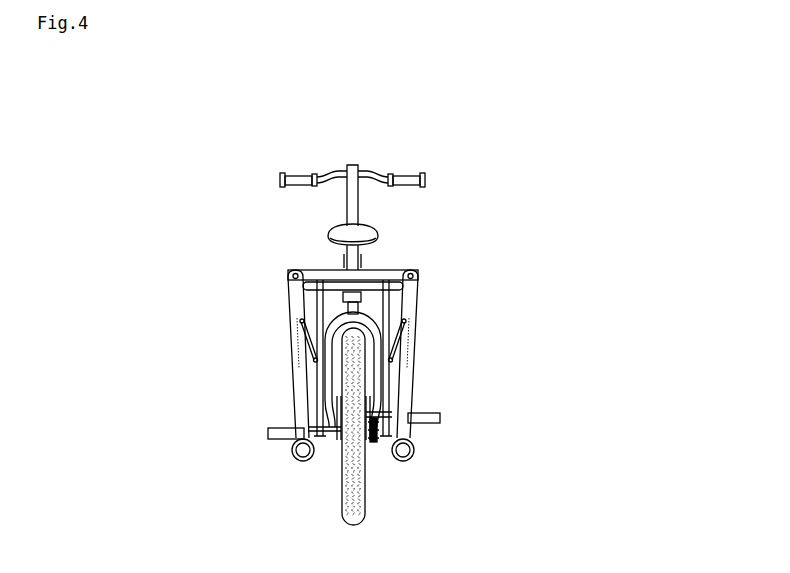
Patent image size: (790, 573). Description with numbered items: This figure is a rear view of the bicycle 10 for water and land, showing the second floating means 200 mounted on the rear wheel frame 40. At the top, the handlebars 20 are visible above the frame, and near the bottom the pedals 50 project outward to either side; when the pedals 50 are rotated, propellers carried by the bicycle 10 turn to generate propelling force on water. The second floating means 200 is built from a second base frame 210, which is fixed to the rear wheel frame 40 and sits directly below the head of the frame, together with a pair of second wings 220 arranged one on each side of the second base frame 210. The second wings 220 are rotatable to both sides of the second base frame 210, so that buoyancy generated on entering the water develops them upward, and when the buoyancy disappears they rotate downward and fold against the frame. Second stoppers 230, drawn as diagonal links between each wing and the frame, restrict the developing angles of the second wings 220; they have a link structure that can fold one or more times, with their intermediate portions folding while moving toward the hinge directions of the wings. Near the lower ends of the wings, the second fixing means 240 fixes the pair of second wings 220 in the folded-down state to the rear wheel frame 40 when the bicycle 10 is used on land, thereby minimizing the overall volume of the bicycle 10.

The bicycle for water and land 10 is at (392, 144).
The handlebars 20 is at (294, 168).
The rear wheel frame 40 is at (330, 504).
The pedals 50 is at (440, 417).
The second floating means 200 is at (404, 258).
The second base frame 210 is at (324, 281).
The second wings 220 is at (412, 295).
The second stoppers 230 is at (400, 339).
The second fixing means 240 is at (392, 395).